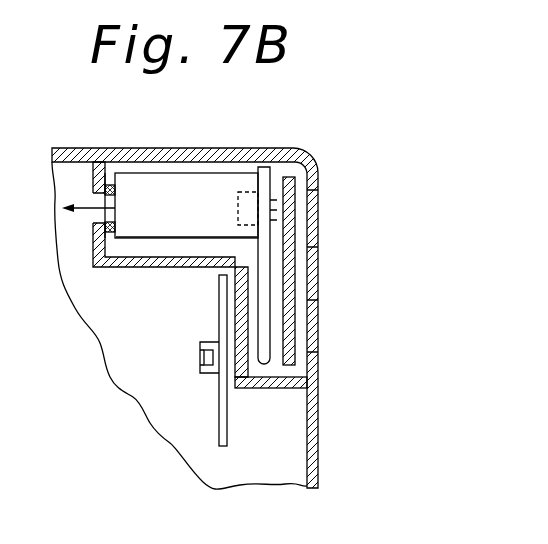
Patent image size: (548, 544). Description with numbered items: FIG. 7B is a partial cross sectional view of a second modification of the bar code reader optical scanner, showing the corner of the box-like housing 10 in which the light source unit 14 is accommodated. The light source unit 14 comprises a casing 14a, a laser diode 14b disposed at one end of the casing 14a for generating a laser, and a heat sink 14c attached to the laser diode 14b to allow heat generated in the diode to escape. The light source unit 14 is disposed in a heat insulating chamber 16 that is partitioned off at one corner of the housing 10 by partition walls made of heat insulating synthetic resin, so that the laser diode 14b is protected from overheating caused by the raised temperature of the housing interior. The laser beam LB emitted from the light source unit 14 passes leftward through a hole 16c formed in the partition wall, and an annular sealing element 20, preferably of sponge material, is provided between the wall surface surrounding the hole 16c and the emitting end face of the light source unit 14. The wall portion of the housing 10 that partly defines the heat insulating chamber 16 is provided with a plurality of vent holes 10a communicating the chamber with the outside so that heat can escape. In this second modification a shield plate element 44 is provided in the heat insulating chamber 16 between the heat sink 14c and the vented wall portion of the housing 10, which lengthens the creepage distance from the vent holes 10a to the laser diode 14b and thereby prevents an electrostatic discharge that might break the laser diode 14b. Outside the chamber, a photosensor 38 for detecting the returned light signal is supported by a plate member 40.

The box-like housing 10 is at (158, 146).
The vent holes 10a is at (318, 190).
The light source unit 14 is at (220, 173).
The casing 14a is at (143, 238).
The laser diode 14b is at (237, 213).
The heat sink 14c is at (270, 387).
The heat insulating chamber 16 is at (175, 258).
The hole 16c is at (93, 217).
The annular sealing element 20 is at (118, 182).
The photosensor 38 is at (203, 364).
The plate member 40 is at (227, 442).
The shield plate element 44 is at (295, 178).
The laser beam LB is at (76, 199).